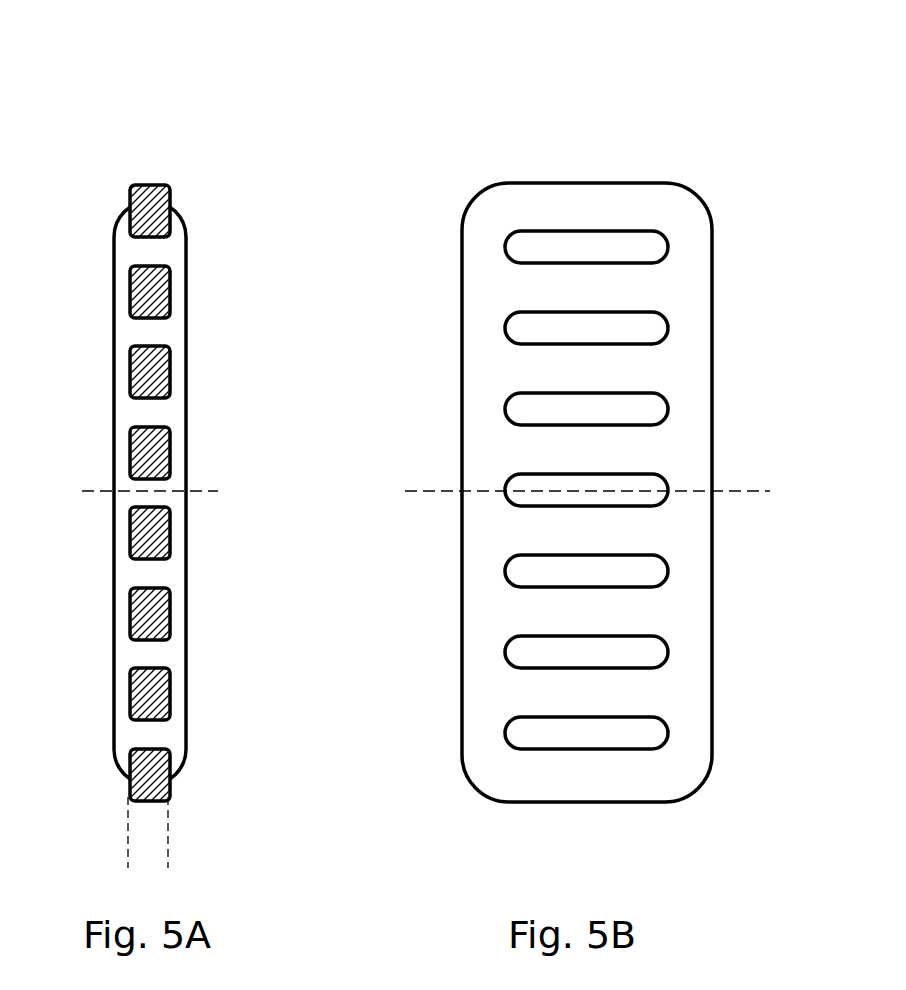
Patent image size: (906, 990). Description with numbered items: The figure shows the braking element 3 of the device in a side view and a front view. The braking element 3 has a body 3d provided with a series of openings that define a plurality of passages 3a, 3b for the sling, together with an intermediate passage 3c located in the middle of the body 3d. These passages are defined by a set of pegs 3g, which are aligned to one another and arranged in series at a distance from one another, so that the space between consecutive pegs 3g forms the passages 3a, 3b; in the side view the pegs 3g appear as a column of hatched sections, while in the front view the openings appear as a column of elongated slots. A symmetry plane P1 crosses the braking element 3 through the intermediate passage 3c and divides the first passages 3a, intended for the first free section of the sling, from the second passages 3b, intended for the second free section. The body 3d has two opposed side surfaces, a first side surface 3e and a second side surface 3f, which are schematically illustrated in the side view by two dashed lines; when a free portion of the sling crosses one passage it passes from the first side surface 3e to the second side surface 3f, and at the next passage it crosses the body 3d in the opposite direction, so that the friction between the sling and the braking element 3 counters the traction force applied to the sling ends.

In FIG. 5A, the braking element 3 is at (110, 114).
In FIG. 5B, the braking element 3 is at (506, 113).
In FIG. 5A, the passages 3a is at (157, 408).
In FIG. 5B, the passages 3a is at (507, 250).
In FIG. 5A, the passages 3b is at (157, 733).
In FIG. 5B, the passages 3b is at (507, 573).
In FIG. 5A, the intermediate passage 3c is at (138, 483).
In FIG. 5B, the intermediate passage 3c is at (635, 482).
In FIG. 5B, the body 3d is at (680, 205).
In FIG. 5A, the first side surface 3e is at (126, 830).
In FIG. 5A, the second side surface 3f is at (170, 830).
In FIG. 5A, the pegs 3g is at (157, 183).
In FIG. 5B, the pegs 3g is at (643, 287).
In FIG. 5A, the symmetry plane P1 is at (208, 479).
In FIG. 5B, the symmetry plane P1 is at (428, 479).